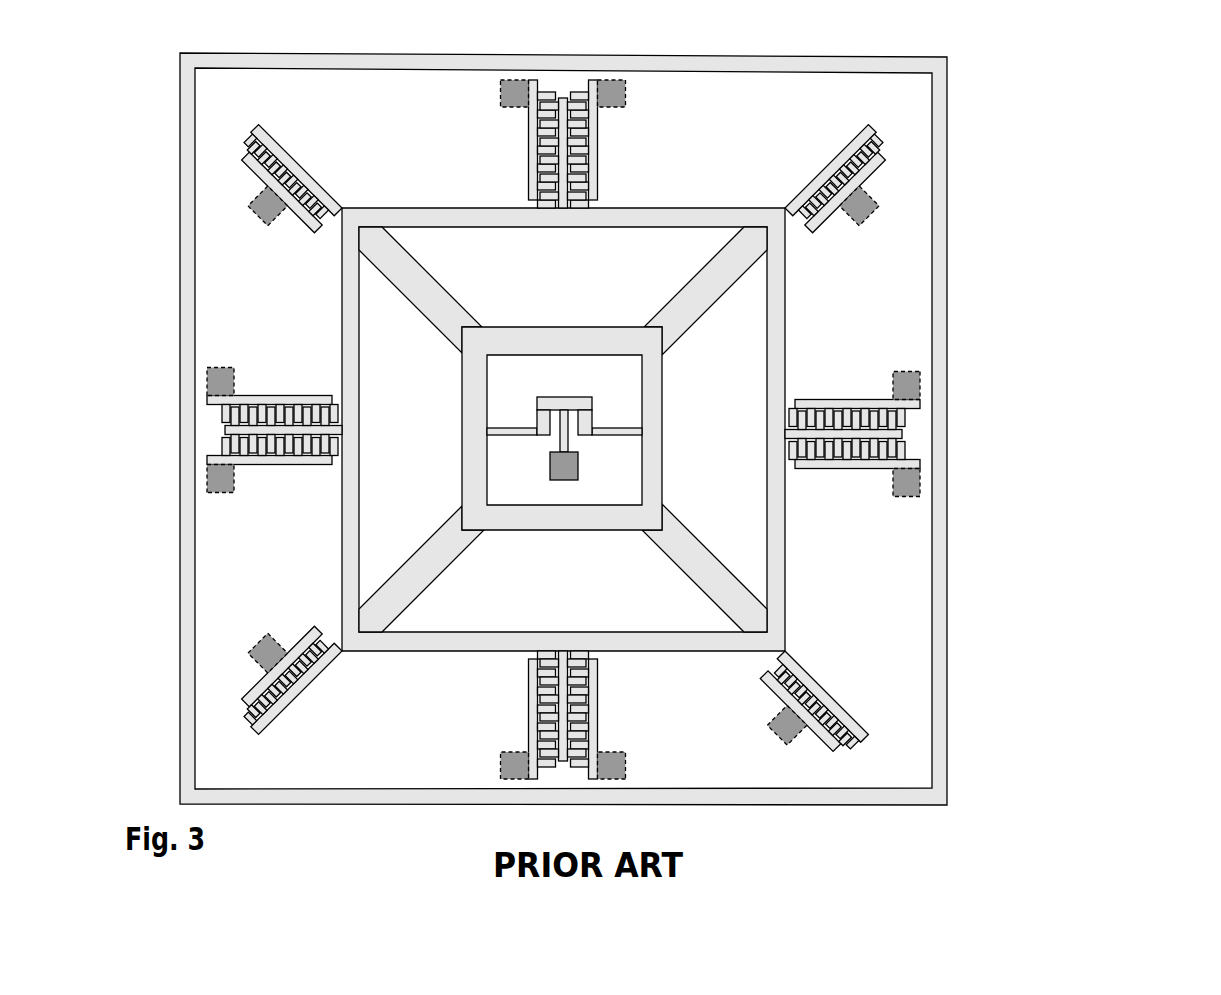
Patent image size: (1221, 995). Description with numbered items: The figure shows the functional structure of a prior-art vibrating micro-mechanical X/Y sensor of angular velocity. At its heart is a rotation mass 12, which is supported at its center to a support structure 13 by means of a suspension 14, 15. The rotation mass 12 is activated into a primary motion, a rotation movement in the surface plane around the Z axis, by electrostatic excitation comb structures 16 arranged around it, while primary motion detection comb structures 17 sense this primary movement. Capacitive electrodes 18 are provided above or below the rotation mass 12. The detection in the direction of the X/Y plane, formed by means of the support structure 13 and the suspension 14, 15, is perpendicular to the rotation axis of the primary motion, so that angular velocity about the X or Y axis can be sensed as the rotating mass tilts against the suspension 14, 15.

The rotation mass 12 is at (786, 621).
The support structure 13 is at (578, 468).
The suspension 14 is at (567, 423).
The suspension 15 is at (625, 430).
The electrostatic excitation comb structures 16 is at (885, 146).
The primary motion detection comb structures 17 is at (907, 430).
The capacitive electrodes 18 is at (768, 327).